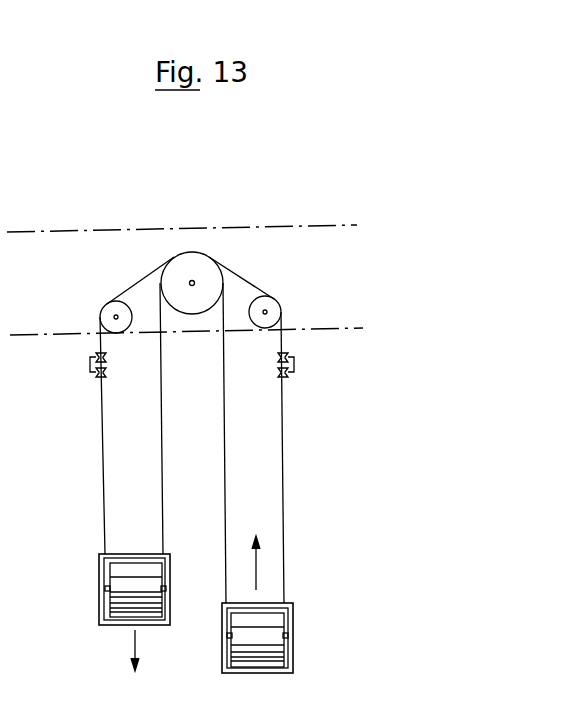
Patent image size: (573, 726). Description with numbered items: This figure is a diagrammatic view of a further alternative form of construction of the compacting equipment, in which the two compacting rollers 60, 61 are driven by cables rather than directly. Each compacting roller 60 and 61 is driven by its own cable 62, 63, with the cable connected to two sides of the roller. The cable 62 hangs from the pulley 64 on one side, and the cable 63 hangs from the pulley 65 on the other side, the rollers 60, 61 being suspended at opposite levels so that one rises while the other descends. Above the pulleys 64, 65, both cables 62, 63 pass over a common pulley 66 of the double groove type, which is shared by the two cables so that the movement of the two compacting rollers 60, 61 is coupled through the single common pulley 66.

The compacting roller 60 is at (118, 590).
The compacting roller 61 is at (278, 622).
The cable 62 is at (102, 443).
The cable 63 is at (223, 443).
The pulley 64 is at (101, 316).
The pulley 65 is at (279, 311).
The common pulley 66 is at (198, 281).